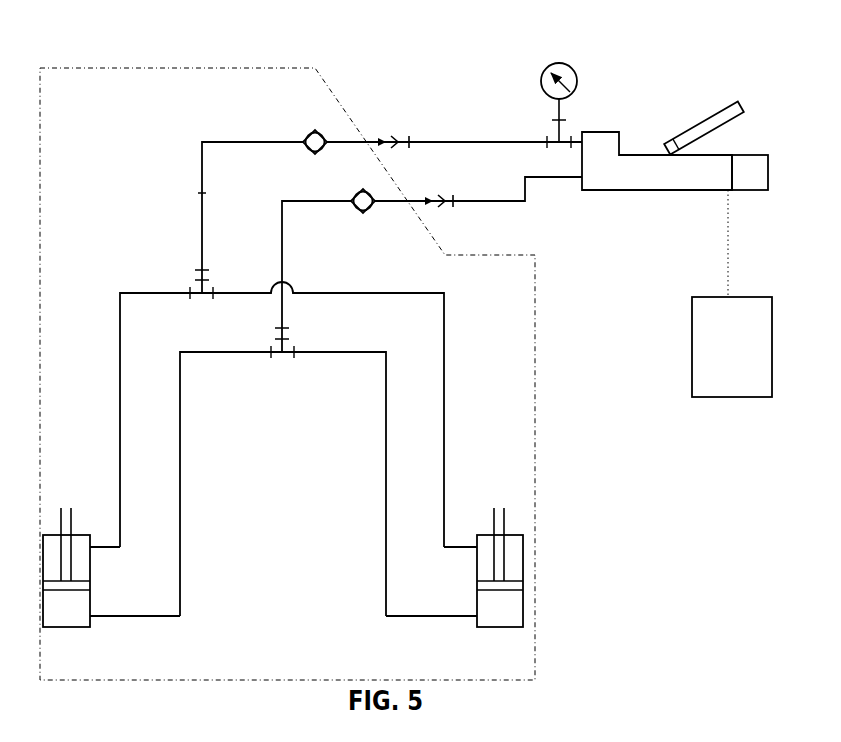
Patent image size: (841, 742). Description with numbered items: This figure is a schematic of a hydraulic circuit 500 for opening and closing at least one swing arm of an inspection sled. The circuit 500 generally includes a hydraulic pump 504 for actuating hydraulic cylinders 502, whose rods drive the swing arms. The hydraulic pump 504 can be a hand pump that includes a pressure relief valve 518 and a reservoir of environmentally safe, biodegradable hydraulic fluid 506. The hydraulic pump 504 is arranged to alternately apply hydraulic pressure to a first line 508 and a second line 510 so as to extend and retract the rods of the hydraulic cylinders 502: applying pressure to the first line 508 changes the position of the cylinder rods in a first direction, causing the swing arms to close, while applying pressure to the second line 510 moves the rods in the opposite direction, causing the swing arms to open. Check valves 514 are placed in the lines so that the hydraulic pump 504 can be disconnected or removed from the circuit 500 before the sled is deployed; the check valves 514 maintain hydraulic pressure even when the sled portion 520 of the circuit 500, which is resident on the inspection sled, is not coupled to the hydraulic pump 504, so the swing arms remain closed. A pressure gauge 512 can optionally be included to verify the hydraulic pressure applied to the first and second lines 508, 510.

The hydraulic circuit 500 is at (645, 517).
The hydraulic cylinders 502 is at (65, 630).
The hydraulic pump 504 is at (671, 194).
The hydraulic fluid reservoir 506 is at (689, 350).
The first line 508 is at (489, 137).
The second line 510 is at (529, 204).
The pressure gauge 512 is at (564, 61).
The check valves 514 is at (395, 132).
The pressure relief valve 518 is at (310, 130).
The sled portion of the hydraulic circuit 520 is at (272, 649).